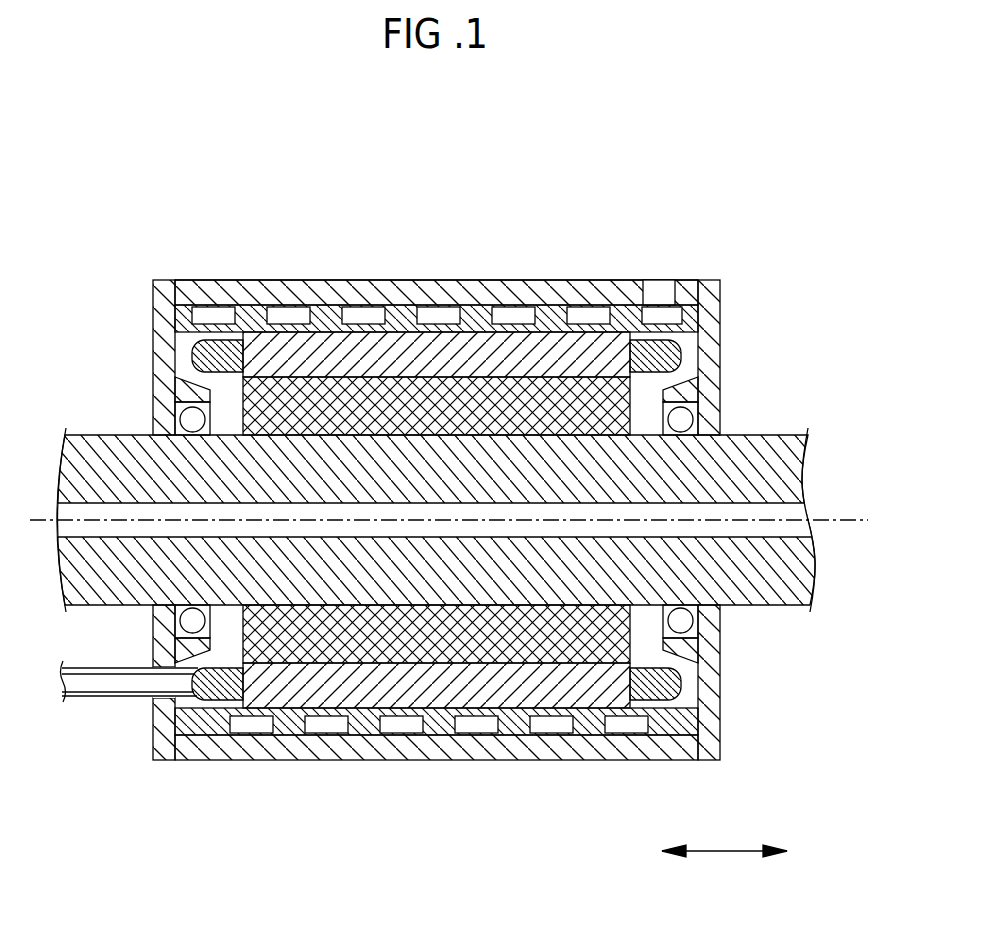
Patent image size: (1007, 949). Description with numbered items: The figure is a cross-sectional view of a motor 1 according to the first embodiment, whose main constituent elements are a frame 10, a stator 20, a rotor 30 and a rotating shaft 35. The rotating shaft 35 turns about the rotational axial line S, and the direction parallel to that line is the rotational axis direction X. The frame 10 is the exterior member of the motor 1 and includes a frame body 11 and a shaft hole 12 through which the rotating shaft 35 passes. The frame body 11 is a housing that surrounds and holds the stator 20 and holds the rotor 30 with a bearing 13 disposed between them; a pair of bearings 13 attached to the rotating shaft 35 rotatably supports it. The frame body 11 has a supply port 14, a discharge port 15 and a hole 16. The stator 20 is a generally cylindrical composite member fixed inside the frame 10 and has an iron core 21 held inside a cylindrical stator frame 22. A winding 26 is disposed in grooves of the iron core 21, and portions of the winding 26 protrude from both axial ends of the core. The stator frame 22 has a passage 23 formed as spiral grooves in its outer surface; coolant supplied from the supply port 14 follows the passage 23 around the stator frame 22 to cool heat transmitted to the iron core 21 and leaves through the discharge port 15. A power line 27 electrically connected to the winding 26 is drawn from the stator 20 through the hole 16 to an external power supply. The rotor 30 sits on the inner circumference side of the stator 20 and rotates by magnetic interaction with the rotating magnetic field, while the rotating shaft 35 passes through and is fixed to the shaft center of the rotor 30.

The motor 1 is at (750, 194).
The frame 10 is at (628, 271).
The frame body 11 is at (688, 280).
The shaft hole 12 is at (150, 432).
The bearing 13 is at (187, 399).
The supply port 14 is at (658, 279).
The discharge port 15 is at (224, 287).
The hole 16 is at (152, 667).
The stator 20 is at (212, 319).
The iron core 21 is at (557, 336).
The stator frame 22 is at (406, 308).
The passage 23 is at (377, 316).
The winding 26 is at (684, 343).
The power line 27 is at (90, 699).
The rotor 30 is at (637, 397).
The rotating shaft 35 is at (787, 437).
The rotational axial line S is at (845, 519).
The rotational axis direction X is at (725, 852).